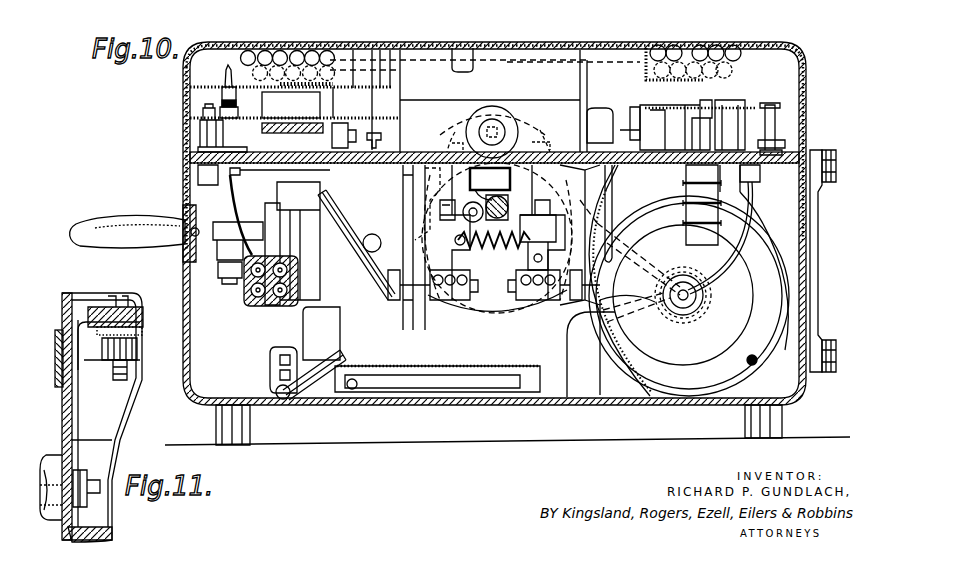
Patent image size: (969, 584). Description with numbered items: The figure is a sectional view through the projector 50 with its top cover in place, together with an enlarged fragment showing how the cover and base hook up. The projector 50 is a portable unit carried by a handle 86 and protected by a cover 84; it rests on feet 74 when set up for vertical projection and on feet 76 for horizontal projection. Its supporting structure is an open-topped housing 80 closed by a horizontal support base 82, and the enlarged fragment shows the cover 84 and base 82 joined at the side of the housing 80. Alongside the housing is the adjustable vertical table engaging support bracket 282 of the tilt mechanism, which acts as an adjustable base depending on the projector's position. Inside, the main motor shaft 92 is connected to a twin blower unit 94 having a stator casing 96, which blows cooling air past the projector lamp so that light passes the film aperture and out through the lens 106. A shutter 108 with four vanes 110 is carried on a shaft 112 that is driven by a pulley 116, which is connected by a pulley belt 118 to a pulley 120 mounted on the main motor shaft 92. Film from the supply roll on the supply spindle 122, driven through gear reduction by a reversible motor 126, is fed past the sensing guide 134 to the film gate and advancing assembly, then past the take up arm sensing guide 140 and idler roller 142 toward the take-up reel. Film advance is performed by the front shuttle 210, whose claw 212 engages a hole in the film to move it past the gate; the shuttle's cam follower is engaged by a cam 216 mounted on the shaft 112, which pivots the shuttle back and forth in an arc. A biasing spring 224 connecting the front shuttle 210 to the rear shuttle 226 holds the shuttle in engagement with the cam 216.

In FIG. 10, the projector 50 is at (760, 27).
In FIG. 10, the feet 74 is at (838, 165).
In FIG. 10, the feet 76 is at (252, 429).
In FIG. 10, the housing 80 is at (222, 397).
In FIG. 11, the housing 80 is at (90, 437).
In FIG. 10, the horizontal support base 82 is at (656, 165).
In FIG. 11, the horizontal support base 82 is at (142, 315).
In FIG. 10, the cover 84 is at (183, 88).
In FIG. 11, the cover 84 is at (62, 298).
In FIG. 10, the handle 86 is at (110, 218).
In FIG. 11, the handle 86 is at (52, 468).
In FIG. 10, the shaft 92 is at (695, 290).
In FIG. 10, the twin blower unit 94 is at (785, 216).
In FIG. 10, the stator casing 96 is at (724, 165).
In FIG. 10, the lens 106 is at (492, 108).
In FIG. 10, the shutter 108 is at (510, 310).
In FIG. 10, the vanes 110 is at (524, 120).
In FIG. 10, the shaft 112 is at (490, 184).
In FIG. 10, the pulley 116 is at (440, 170).
In FIG. 10, the pulley belt 118 is at (648, 308).
In FIG. 10, the pulley 120 is at (700, 308).
In FIG. 10, the supply spindle 122 is at (223, 64).
In FIG. 10, the reversible motor 126 is at (372, 265).
In FIG. 10, the sensing guide 134 is at (200, 133).
In FIG. 10, the take up arm sensing guide 140 is at (790, 121).
In FIG. 10, the idler roller 142 is at (660, 125).
In FIG. 10, the front shuttle 210 is at (585, 190).
In FIG. 10, the claw 212 is at (458, 130).
In FIG. 10, the cam 216 is at (538, 235).
In FIG. 10, the biasing spring 224 is at (490, 262).
In FIG. 10, the rear shuttle 226 is at (450, 290).
In FIG. 10, the vertical table engaging support bracket 282 is at (812, 229).